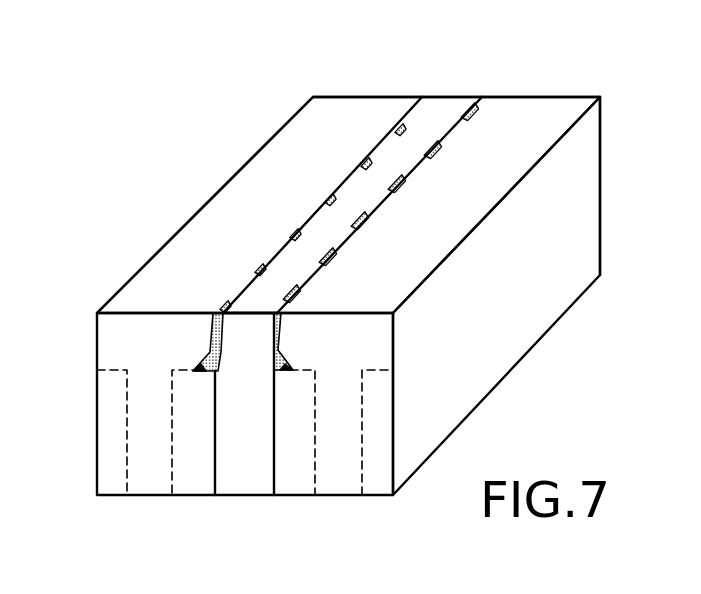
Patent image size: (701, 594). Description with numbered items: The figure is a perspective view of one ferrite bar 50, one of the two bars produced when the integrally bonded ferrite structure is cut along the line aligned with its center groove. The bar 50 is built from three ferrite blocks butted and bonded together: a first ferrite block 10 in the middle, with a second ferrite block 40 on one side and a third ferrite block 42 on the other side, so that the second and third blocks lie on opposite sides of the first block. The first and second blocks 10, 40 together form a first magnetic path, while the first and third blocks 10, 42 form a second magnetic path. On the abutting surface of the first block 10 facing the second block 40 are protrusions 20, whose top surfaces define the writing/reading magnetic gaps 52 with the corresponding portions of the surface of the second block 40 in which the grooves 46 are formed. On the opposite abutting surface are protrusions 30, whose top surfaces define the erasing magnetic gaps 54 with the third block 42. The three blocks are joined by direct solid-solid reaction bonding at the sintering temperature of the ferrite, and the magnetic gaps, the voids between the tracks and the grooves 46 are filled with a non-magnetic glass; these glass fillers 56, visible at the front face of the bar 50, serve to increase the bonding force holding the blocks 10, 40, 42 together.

The ferrite bar 50 is at (182, 172).
The second ferrite block 40 is at (358, 100).
The first ferrite block 10 is at (452, 102).
The third ferrite block 42 is at (540, 110).
The protrusions 20 is at (277, 253).
The protrusions 30 is at (347, 238).
The writing/reading magnetic gaps 52 is at (348, 172).
The erasing magnetic gaps 54 is at (423, 163).
The glass fillers 56 is at (212, 357).
The grooves 46 is at (206, 372).